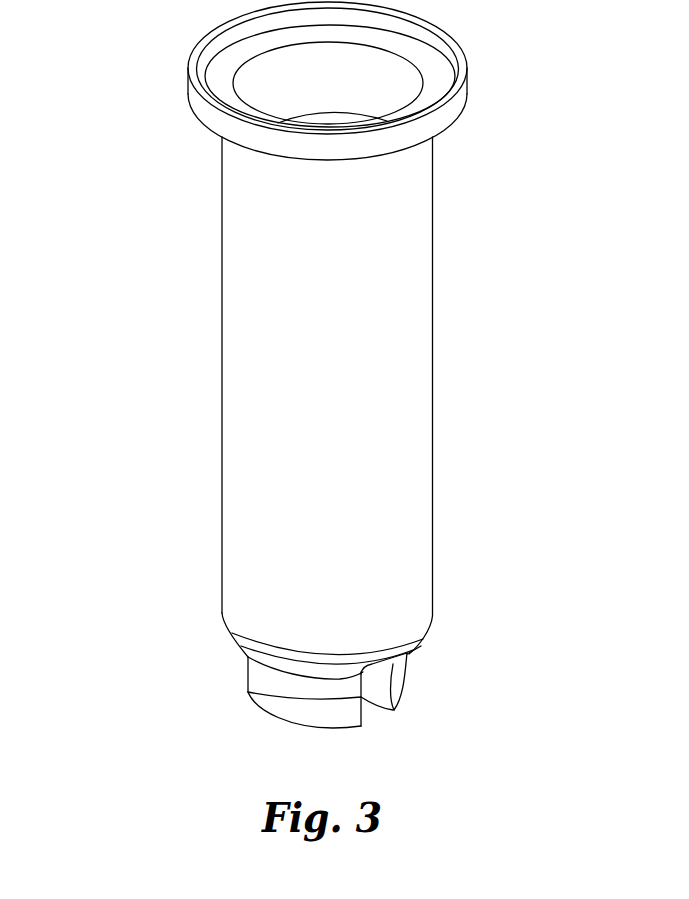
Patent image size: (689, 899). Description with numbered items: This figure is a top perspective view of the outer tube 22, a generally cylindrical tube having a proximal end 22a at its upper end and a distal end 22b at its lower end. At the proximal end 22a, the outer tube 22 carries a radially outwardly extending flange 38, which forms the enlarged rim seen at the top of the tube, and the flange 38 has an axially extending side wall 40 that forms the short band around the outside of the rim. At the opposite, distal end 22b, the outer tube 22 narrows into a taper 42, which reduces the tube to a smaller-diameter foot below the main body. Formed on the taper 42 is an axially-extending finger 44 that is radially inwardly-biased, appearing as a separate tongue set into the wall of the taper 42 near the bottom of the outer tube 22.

The outer tube 22 is at (188, 317).
The proximal end 22a is at (167, 103).
The distal end 22b is at (220, 613).
The flange 38 is at (437, 73).
The side wall 40 is at (452, 120).
The taper 42 is at (256, 695).
The finger 44 is at (376, 699).